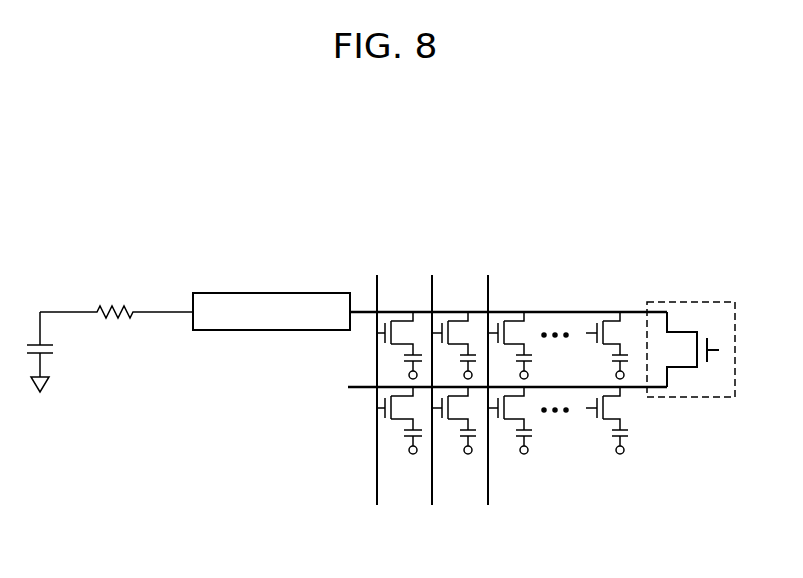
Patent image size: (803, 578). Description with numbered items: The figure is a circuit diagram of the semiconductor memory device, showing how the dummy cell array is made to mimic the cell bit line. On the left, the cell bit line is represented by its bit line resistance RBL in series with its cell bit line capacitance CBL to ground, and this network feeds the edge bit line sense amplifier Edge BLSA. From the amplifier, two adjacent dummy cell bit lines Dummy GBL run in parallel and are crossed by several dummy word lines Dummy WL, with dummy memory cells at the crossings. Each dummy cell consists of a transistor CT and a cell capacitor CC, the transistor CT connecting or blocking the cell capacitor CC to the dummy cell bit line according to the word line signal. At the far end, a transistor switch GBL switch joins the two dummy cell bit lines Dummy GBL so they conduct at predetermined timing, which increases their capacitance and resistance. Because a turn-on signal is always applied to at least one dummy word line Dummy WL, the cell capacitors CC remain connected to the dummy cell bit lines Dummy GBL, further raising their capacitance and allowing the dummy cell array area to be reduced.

The bit line resistance RBL is at (116, 297).
The cell bit line capacitance CBL is at (61, 352).
The edge bit line sense amplifier Edge BLSA is at (271, 311).
The transistor CT is at (390, 315).
The cell capacitor CC is at (402, 364).
The dummy cell bit lines Dummy GBL is at (573, 387).
The dummy word lines Dummy WL is at (427, 403).
The transistor switch GBL switch is at (688, 335).